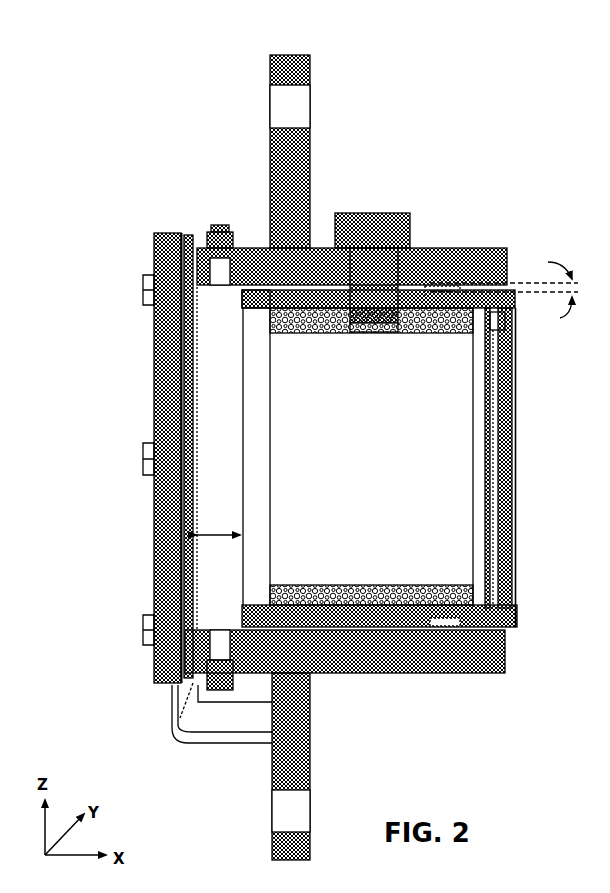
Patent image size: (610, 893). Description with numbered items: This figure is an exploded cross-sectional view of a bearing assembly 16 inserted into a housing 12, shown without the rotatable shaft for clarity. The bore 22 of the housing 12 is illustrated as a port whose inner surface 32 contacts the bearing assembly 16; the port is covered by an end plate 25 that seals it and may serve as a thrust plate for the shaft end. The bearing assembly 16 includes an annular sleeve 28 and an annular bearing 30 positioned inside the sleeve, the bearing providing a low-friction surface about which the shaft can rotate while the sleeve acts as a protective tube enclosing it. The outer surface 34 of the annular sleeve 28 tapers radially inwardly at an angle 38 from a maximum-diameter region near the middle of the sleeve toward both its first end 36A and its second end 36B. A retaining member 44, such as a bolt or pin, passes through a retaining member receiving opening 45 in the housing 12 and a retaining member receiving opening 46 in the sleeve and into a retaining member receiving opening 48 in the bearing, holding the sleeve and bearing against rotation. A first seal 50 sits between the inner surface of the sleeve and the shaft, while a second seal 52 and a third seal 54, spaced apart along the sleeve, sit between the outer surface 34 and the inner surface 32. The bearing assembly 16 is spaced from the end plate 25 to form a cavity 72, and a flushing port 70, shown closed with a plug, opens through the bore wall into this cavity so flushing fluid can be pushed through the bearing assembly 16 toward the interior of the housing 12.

The housing 12 is at (245, 125).
The bearing assembly 16 is at (542, 602).
The bore 22 is at (218, 388).
The end plate 25 is at (155, 520).
The annular sleeve 28 is at (370, 605).
The annular bearing 30 is at (330, 588).
The inner surface 32 is at (335, 292).
The outer surface 34 is at (262, 290).
The first end 36A is at (509, 302).
The second end 36B is at (241, 306).
The angle 38 is at (520, 290).
The retaining member 44 is at (365, 213).
The retaining member receiving opening 45 is at (393, 260).
The retaining member receiving opening 46 is at (318, 313).
The retaining member receiving opening 48 is at (355, 328).
The first seal 50 is at (512, 445).
The second seal 52 is at (450, 288).
The third seal 54 is at (427, 292).
The flushing port 70 is at (225, 226).
The cavity 72 is at (218, 522).